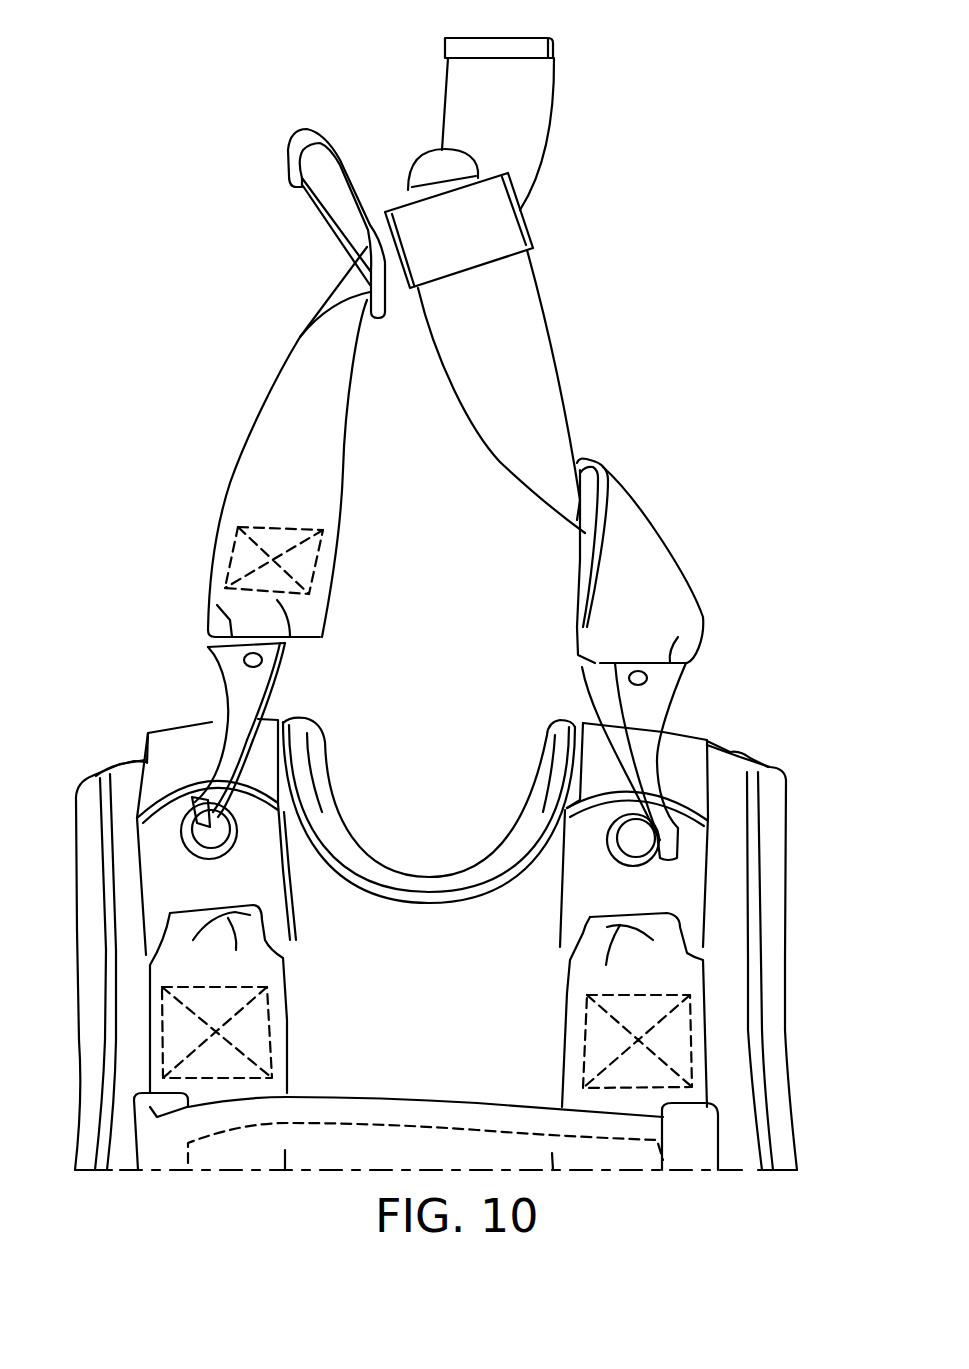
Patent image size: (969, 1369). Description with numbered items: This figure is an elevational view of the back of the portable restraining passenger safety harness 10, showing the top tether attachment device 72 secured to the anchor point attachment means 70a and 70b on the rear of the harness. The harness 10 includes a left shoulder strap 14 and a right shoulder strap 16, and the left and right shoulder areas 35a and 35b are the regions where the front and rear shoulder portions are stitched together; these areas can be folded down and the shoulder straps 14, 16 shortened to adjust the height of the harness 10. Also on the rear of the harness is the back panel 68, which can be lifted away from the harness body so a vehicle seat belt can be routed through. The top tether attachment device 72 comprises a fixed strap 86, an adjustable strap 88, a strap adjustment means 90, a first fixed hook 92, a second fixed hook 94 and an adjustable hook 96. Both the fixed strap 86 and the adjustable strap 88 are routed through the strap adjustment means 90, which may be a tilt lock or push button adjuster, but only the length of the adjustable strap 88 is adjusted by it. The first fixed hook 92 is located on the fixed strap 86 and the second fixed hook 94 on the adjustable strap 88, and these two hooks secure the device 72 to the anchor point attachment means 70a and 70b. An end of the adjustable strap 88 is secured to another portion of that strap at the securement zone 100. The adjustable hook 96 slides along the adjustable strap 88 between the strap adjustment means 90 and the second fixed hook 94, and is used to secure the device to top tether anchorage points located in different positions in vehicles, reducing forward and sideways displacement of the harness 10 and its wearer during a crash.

The portable restraining passenger safety harness 10 is at (796, 1005).
The left shoulder strap 14 is at (278, 1078).
The right shoulder strap 16 is at (572, 1080).
The left shoulder area 35a is at (107, 764).
The right shoulder area 35b is at (760, 756).
The back panel 68 is at (427, 1113).
The anchor point attachment means 70a is at (268, 906).
The anchor point attachment means 70b is at (575, 906).
The top tether attachment device 72 is at (253, 348).
The fixed strap 86 is at (523, 333).
The adjustable strap 88 is at (523, 102).
The strap adjustment means 90 is at (495, 216).
The first fixed hook 92 is at (678, 677).
The second fixed hook 94 is at (213, 665).
The adjustable hook 96 is at (300, 135).
The securement zone 100 is at (232, 545).